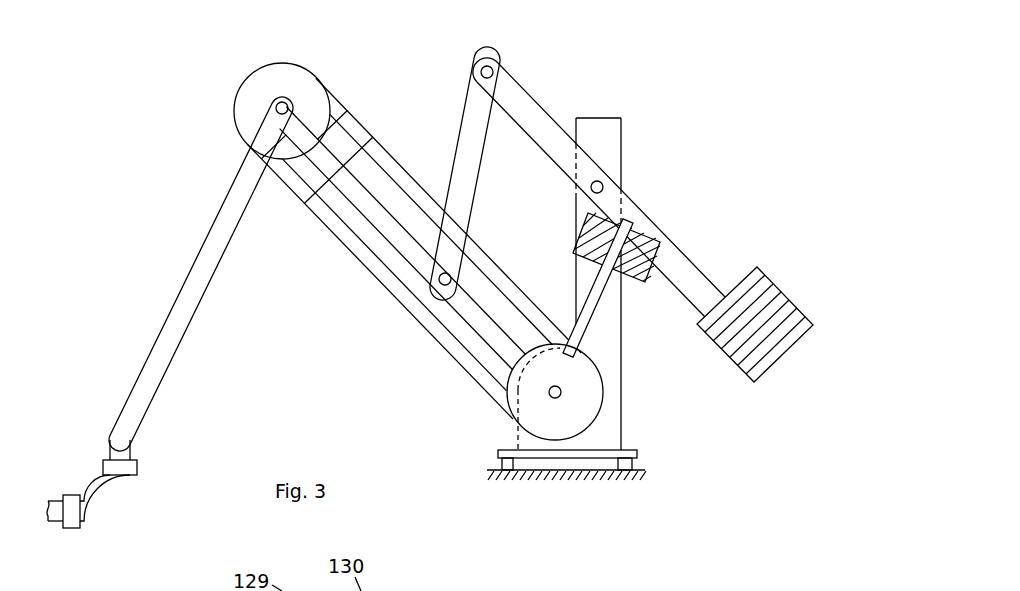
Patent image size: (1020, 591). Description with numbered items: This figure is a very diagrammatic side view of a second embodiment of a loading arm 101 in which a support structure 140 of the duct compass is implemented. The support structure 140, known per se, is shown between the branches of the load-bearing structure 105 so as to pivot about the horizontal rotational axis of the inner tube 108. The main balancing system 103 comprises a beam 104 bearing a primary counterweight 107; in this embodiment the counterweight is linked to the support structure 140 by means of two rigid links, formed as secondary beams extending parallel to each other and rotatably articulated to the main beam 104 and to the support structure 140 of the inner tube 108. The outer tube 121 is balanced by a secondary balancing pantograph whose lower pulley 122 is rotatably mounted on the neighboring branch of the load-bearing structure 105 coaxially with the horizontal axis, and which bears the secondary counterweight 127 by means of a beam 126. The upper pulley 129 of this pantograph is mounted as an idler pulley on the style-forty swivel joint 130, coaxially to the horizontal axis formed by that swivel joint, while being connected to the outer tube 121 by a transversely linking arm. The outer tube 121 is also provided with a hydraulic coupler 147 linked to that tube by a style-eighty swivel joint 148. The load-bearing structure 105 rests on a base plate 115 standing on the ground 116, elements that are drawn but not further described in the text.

The loading arm 101 is at (712, 118).
The main balancing system 103 is at (541, 87).
The beam 104 is at (680, 272).
The load-bearing structure 105 is at (628, 408).
The primary counterweight 107 is at (780, 297).
The inner tube 108 is at (383, 220).
The base plate 115 is at (646, 452).
The ground 116 is at (648, 463).
The outer tube 121 is at (200, 283).
The lower pulley 122 is at (515, 412).
The beam 126 is at (585, 350).
The secondary counterweight 127 is at (646, 282).
The upper pulley 129 is at (277, 60).
The style "40" 130 is at (266, 108).
The support structure 140 is at (390, 134).
The hydraulic coupler 147 is at (51, 532).
The style "80" 148 is at (140, 488).